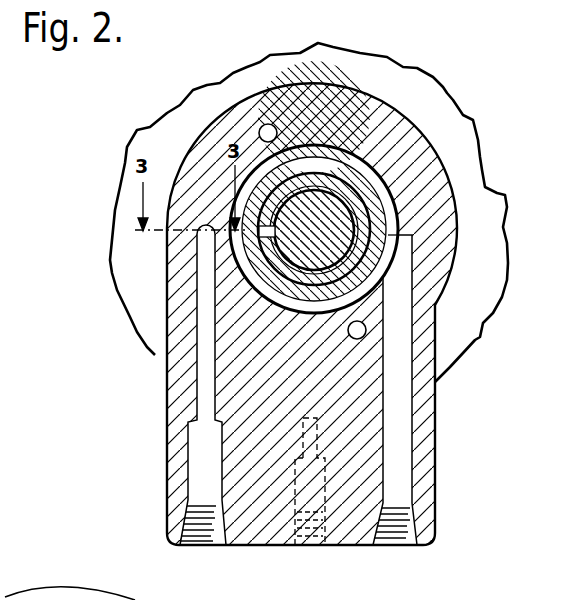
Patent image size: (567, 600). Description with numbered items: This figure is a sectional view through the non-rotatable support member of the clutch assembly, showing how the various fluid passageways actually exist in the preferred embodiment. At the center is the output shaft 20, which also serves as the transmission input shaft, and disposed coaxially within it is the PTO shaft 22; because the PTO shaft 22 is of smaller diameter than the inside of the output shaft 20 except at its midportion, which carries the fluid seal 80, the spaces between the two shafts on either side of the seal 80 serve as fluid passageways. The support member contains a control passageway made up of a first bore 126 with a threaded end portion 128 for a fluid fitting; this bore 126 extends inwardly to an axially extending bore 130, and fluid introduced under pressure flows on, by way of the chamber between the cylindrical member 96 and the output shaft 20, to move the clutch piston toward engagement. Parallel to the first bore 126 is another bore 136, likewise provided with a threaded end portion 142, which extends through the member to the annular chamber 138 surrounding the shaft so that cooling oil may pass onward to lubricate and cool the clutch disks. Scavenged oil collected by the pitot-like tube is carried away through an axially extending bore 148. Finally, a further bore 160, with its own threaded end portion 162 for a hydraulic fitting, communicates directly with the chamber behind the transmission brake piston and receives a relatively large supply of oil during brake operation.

The output shaft 20 is at (362, 182).
The PTO shaft 22 is at (328, 224).
The fluid seal 80 is at (322, 183).
The first bore 126 is at (203, 403).
The threaded end portion 128 is at (215, 546).
The axially extending bore 130 is at (210, 236).
The bore 136 is at (410, 420).
The annular chamber 138 is at (395, 208).
The threaded end portion 142 is at (406, 530).
The axially extending bore 148 is at (268, 124).
The further bore 160 is at (298, 479).
The threaded end portion 162 is at (312, 547).
The cylindrical member 96 is at (22, 582).